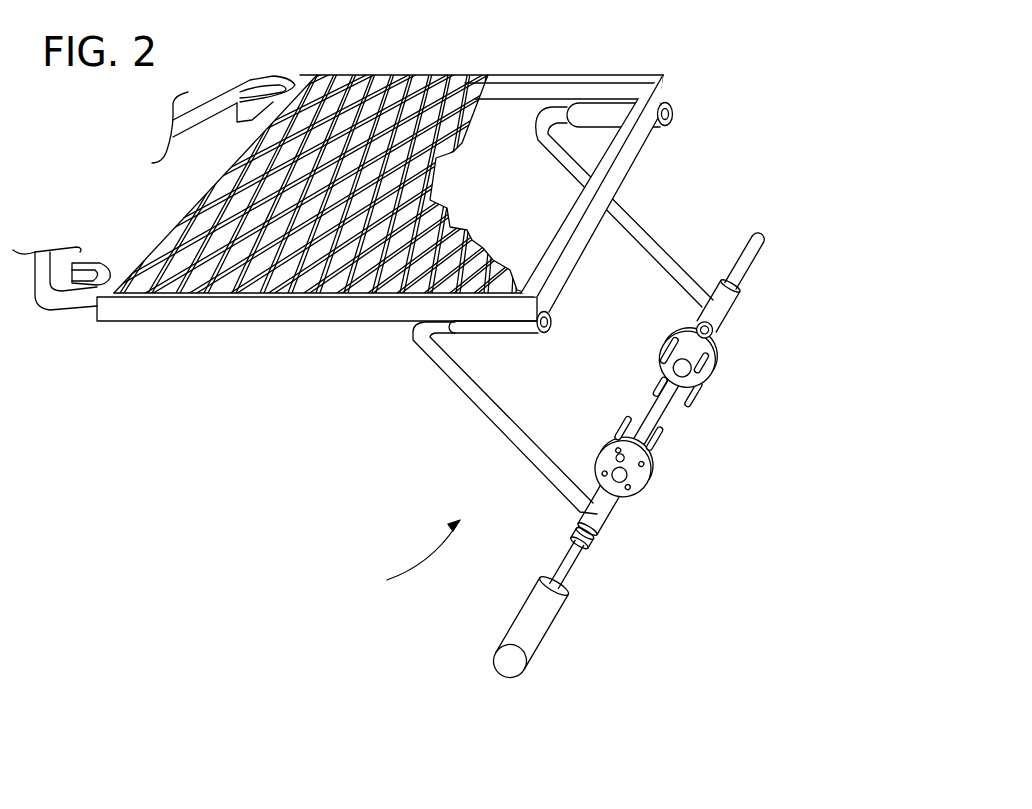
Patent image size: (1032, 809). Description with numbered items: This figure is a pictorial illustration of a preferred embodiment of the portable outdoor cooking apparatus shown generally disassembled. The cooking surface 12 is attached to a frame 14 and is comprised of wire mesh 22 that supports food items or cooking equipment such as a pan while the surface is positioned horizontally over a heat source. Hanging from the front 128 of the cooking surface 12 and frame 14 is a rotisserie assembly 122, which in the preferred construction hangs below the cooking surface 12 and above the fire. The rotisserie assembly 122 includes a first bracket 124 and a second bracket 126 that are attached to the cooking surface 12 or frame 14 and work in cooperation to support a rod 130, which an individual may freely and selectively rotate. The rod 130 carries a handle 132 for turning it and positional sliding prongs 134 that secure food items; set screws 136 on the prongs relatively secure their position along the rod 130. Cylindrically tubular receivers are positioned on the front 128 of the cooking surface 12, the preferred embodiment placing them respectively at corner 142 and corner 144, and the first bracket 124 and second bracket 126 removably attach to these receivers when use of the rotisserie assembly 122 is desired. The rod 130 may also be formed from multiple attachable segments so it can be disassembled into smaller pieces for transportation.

The cooking surface 12 is at (257, 181).
The frame 14 is at (160, 230).
The wire mesh 22 is at (392, 76).
The rotisserie assembly 122 is at (398, 560).
The first bracket 124 is at (480, 405).
The second bracket 126 is at (637, 227).
The front 128 is at (578, 243).
The rod 130 is at (747, 263).
The handle 132 is at (533, 620).
The positional sliding prongs 134 is at (717, 372).
The set screws 136 is at (593, 457).
The corner 142 is at (551, 320).
The corner 144 is at (673, 120).